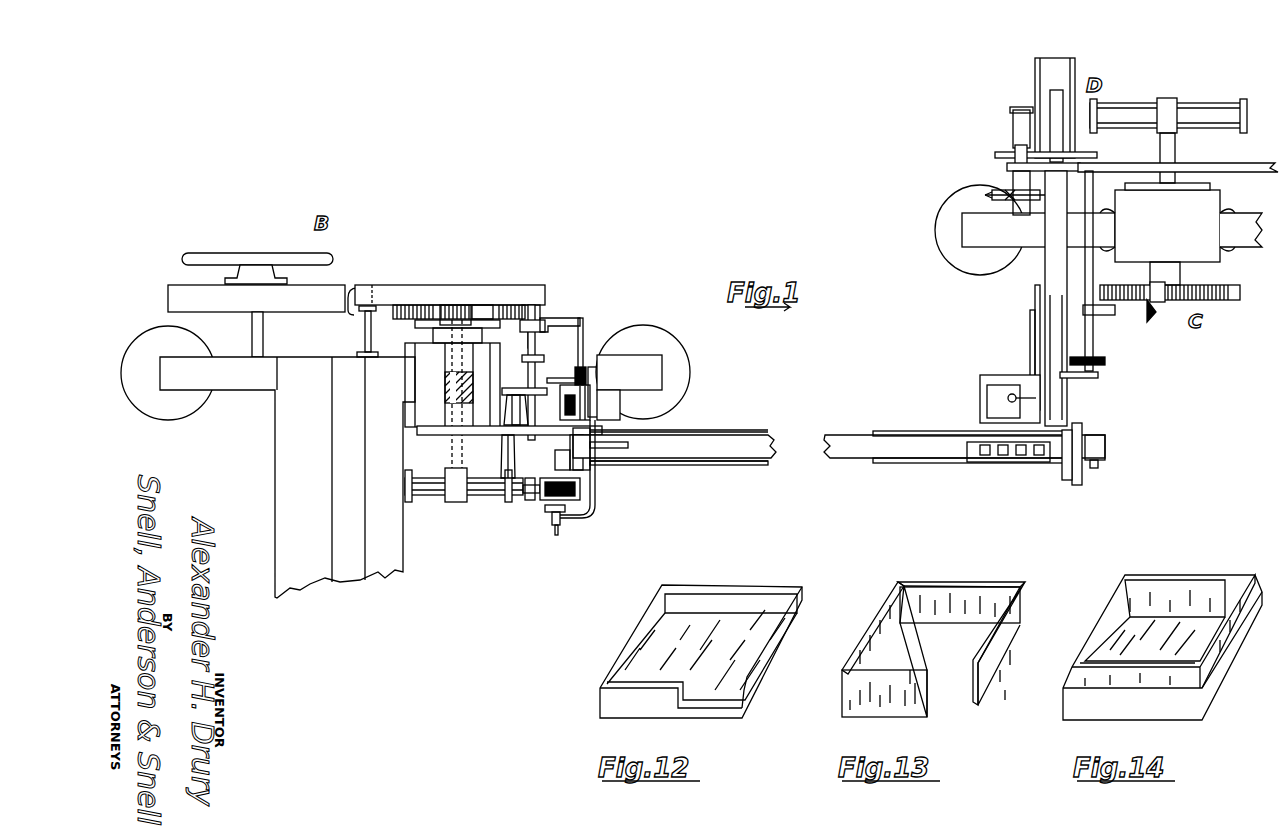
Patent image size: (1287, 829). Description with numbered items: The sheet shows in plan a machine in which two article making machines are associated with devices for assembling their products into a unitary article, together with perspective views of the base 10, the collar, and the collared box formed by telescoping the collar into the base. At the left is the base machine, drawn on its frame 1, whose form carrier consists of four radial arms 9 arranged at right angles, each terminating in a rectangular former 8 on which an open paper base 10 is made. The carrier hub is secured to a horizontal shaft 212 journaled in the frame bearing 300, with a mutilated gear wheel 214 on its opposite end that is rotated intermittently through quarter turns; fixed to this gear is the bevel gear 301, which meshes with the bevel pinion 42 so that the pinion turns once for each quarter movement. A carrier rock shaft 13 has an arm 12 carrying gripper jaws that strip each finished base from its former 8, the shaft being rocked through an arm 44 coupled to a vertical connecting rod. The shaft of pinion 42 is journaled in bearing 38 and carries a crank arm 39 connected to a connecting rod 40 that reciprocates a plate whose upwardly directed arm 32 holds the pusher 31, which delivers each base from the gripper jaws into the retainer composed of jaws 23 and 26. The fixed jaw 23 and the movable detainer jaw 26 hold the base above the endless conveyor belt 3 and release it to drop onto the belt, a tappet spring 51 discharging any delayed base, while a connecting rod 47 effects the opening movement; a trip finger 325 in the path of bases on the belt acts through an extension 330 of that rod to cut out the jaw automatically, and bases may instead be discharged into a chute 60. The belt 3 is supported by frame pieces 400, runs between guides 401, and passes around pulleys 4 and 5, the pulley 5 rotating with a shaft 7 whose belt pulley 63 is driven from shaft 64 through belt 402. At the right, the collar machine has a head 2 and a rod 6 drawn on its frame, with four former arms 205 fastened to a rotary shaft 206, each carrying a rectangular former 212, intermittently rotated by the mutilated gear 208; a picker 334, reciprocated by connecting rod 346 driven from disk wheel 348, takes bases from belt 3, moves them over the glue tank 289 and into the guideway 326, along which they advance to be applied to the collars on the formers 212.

In FIG. 1, the machine frame 1 is at (268, 425).
In FIG. 1, the press head 2 is at (1098, 234).
In FIG. 1, the endless conveyor belt 3 is at (778, 446).
In FIG. 1, the pulley 4 is at (1097, 467).
In FIG. 1, the pulley 5 is at (515, 447).
In FIG. 1, the rod 6 is at (1093, 336).
In FIG. 1, the shaft 7 is at (528, 358).
In FIG. 1, the rectangular mandrel or former 8 is at (410, 502).
In FIG. 1, the radial arm 9 is at (438, 478).
In FIG. 1, the paper base 10 is at (566, 512).
In FIG. 12, the paper base 10 is at (701, 651).
In FIG. 14, the paper base 10 is at (1218, 682).
In FIG. 1, the stiff arm 12 is at (581, 490).
In FIG. 1, the carrier rock shaft 13 is at (530, 500).
In FIG. 1, the retainer jaw 23 is at (514, 455).
In FIG. 1, the detainer jaw 26 is at (562, 456).
In FIG. 1, the pusher 31 is at (557, 540).
In FIG. 1, the upwardly directed arm 32 is at (594, 512).
In FIG. 1, the bearing 38 is at (558, 318).
In FIG. 1, the crank arm 39 is at (583, 334).
In FIG. 1, the connecting rod 40 is at (586, 366).
In FIG. 1, the bevel pinion 42 is at (482, 305).
In FIG. 1, the arm 44 is at (507, 400).
In FIG. 1, the connecting rod 47 is at (522, 388).
In FIG. 1, the tappet member or spring 51 is at (569, 452).
In FIG. 1, the chute 60 is at (620, 408).
In FIG. 1, the belt pulley 63 is at (528, 300).
In FIG. 1, the shaft 64 is at (372, 280).
In FIG. 1, the former arm 205 is at (1215, 130).
In FIG. 1, the rotary shaft 206 is at (1160, 155).
In FIG. 1, the mutilated gear 208 is at (1222, 286).
In FIG. 1, the rectangular former 212 is at (448, 392).
In FIG. 1, the mutilated gear wheel 214 is at (418, 324).
In FIG. 1, the glue tank 289 is at (981, 410).
In FIG. 1, the frame bearing 300 is at (445, 378).
In FIG. 1, the bevel gear 301 is at (433, 338).
In FIG. 1, the trip finger 325 is at (628, 447).
In FIG. 1, the downwardly open channel or guideway 326 is at (1048, 264).
In FIG. 1, the extension 330 is at (590, 386).
In FIG. 1, the picker 334 is at (1062, 462).
In FIG. 1, the connecting rod 346 is at (1035, 349).
In FIG. 1, the disk wheel 348 is at (1035, 303).
In FIG. 1, the frame piece 400 is at (765, 432).
In FIG. 1, the guide 401 is at (735, 465).
In FIG. 1, the belt 402 is at (412, 290).